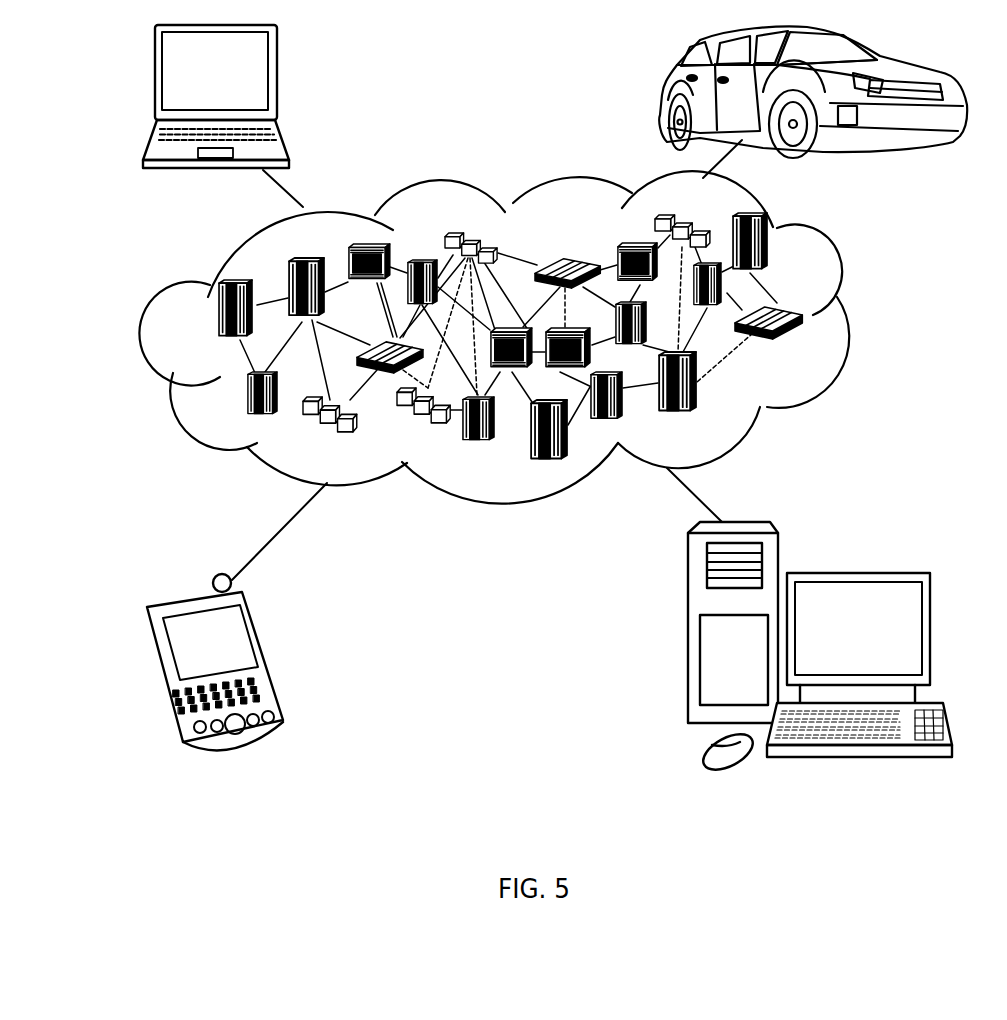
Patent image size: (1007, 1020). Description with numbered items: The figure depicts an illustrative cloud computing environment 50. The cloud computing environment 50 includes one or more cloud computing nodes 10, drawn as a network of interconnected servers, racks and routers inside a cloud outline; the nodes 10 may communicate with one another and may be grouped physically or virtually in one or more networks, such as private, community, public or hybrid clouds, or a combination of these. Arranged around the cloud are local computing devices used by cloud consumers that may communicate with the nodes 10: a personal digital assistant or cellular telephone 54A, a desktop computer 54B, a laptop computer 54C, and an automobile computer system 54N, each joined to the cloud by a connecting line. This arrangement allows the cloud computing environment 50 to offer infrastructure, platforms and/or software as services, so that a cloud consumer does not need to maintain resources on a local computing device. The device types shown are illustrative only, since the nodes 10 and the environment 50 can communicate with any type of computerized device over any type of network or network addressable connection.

The cloud computing node 10 is at (808, 347).
The cloud computing environment 50 is at (523, 337).
The personal digital assistant (PDA) or cellular telephone 54A is at (268, 653).
The desktop computer 54B is at (853, 573).
The laptop computer 54C is at (278, 74).
The automobile computer system 54N is at (662, 92).